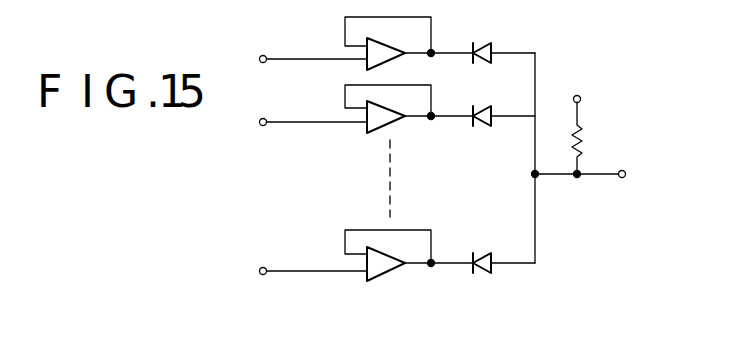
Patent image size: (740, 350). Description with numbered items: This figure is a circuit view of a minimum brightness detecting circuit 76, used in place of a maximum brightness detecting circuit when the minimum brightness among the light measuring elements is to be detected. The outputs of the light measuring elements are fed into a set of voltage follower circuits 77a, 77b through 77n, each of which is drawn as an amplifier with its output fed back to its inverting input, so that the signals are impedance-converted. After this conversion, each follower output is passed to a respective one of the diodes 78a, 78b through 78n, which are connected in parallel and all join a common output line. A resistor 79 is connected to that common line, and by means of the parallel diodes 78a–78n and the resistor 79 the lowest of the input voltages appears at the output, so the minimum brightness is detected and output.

The diode OR circuit 76 is at (548, 0).
The voltage follower circuit 77a is at (372, 67).
The voltage follower circuit 77b is at (369, 133).
The voltage follower circuit 77n is at (392, 273).
The diode 78a is at (482, 42).
The diode 78b is at (484, 105).
The diode 78n is at (493, 268).
The resistor 79 is at (582, 138).